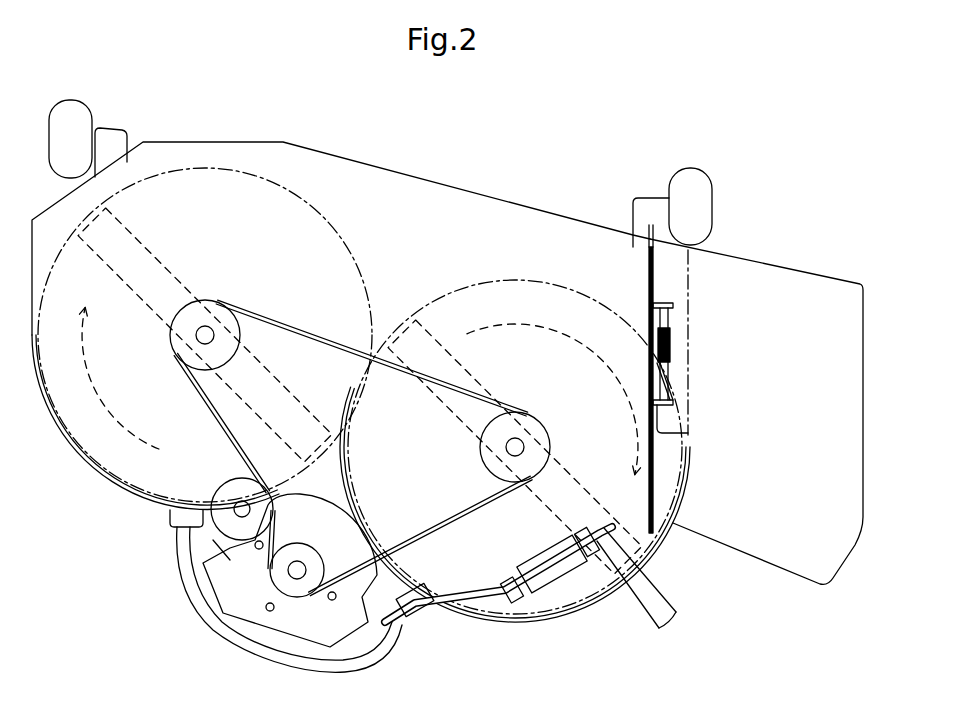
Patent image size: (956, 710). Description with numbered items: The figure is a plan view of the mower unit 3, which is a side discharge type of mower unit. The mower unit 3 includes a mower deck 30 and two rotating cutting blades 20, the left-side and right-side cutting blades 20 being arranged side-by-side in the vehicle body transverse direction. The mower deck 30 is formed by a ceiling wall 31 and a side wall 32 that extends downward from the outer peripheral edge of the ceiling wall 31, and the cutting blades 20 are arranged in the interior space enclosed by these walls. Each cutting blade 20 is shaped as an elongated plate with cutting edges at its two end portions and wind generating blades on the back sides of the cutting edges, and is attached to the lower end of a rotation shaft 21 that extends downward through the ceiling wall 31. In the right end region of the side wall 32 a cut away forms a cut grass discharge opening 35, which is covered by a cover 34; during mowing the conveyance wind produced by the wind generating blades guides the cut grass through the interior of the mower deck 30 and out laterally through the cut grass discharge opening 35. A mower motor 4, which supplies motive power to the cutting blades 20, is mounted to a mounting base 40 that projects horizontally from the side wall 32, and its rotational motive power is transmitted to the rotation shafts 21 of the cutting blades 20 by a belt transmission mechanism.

The mower unit 3 is at (447, 386).
The mower deck 30 is at (447, 361).
The ceiling wall 31 is at (423, 222).
The side wall 32 is at (555, 218).
The cover 34 is at (773, 293).
The cut grass discharge opening 35 is at (688, 380).
The cutting blade 20 is at (128, 228).
The rotation shaft 21 is at (215, 337).
The mower motor 4 is at (342, 547).
The mounting base 40 is at (197, 605).